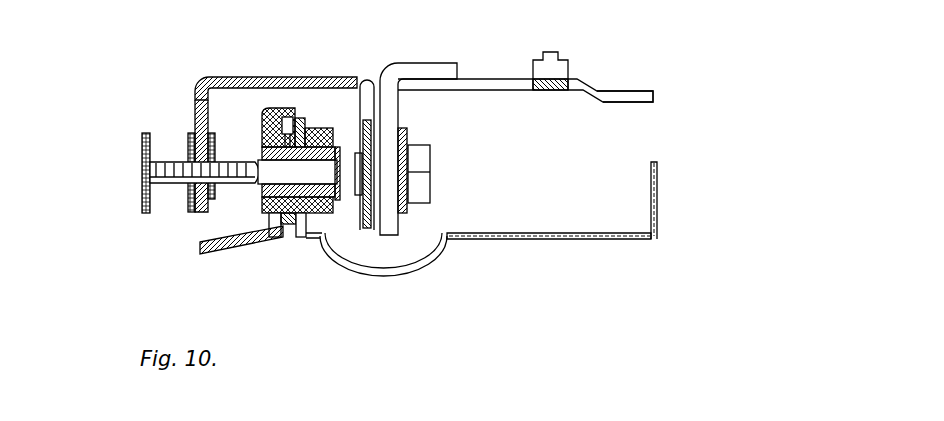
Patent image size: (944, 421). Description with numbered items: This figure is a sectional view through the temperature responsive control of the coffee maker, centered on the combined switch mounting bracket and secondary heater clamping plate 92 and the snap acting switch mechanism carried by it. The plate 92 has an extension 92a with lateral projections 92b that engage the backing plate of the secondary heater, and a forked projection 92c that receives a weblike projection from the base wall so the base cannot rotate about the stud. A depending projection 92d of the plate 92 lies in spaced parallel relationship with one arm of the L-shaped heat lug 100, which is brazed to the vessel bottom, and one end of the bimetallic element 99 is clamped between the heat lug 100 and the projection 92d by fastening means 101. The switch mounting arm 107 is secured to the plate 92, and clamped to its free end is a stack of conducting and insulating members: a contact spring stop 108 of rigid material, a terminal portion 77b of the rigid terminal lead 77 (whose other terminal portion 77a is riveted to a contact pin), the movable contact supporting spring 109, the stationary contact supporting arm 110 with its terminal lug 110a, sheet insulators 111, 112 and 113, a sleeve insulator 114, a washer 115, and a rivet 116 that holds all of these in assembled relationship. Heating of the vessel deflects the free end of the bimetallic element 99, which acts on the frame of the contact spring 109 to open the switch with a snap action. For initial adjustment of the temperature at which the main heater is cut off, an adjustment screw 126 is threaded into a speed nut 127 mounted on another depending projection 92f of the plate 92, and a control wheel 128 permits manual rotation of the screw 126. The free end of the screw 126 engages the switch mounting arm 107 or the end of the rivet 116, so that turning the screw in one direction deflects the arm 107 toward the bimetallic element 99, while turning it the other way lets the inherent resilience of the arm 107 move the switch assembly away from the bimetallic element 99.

The rigid lead or conductor 77 is at (536, 239).
The terminal portion 77a is at (658, 206).
The terminal portion of terminal lead 77b is at (322, 243).
The combined switch mounting bracket and secondary heater clamping plate 92 is at (323, 77).
The extension 92a is at (489, 79).
The lateral projections 92b is at (550, 90).
The forked projection 92c is at (640, 91).
The depending projection 92d is at (364, 198).
The depending projection 92f is at (196, 97).
The bimetallic element 99 is at (374, 123).
The heat lug 100 is at (391, 228).
The fastening means 101 is at (421, 158).
The switch mounting arm 107 is at (268, 124).
The contact spring stop 108 is at (318, 140).
The movable contact supporting spring 109 is at (303, 133).
The stationary contact supporting arm 110 is at (278, 238).
The terminal lug 110a is at (216, 251).
The sheet insulator 111 is at (279, 133).
The sheet insulator 112 is at (292, 128).
The sheet insulator 113 is at (310, 222).
The sleeve insulator 114 is at (268, 151).
The washer 115 is at (325, 203).
The rivet 116 is at (297, 172).
The adjustment screw 126 is at (163, 178).
The speed nut 127 is at (214, 203).
The control wheel 128 is at (142, 148).